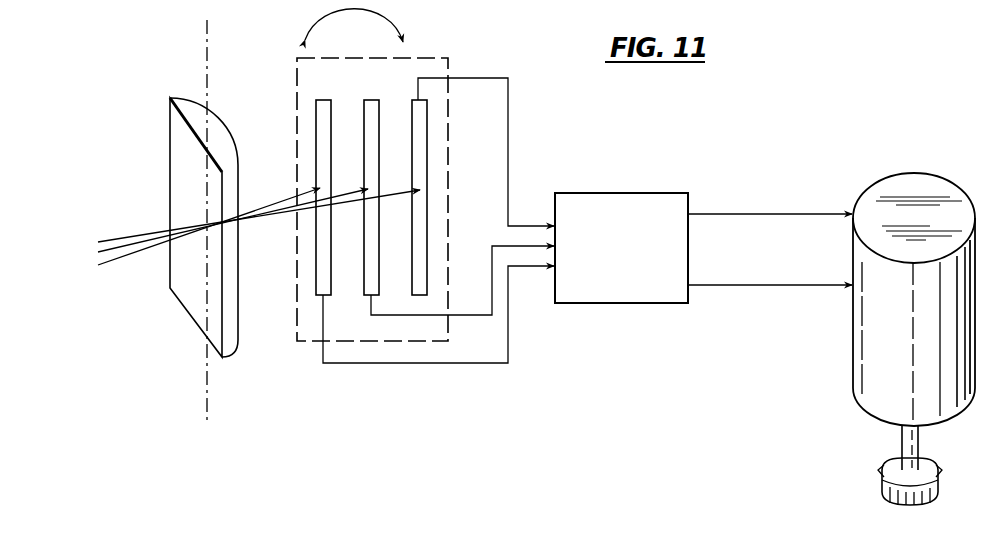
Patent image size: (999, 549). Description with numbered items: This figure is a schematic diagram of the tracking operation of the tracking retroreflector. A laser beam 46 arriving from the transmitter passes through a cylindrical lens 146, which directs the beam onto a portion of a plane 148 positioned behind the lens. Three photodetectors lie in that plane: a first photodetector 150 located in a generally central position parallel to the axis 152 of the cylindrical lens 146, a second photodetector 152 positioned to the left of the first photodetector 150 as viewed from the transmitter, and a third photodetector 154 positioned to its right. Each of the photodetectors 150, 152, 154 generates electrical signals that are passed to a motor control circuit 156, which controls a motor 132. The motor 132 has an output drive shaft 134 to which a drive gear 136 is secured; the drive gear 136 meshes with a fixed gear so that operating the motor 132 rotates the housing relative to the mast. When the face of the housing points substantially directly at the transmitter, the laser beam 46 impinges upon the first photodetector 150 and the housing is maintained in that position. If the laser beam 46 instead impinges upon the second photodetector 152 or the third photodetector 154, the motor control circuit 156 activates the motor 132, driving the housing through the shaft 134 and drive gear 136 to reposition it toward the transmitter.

The second photodetector 152 is at (207, 52).
The cylindrical lens 146 is at (200, 303).
The laser beam 46 is at (147, 243).
The plane 148 is at (425, 342).
The first photodetector 150 is at (362, 281).
The third photodetector 154 is at (427, 228).
The motor control circuit 156 is at (617, 193).
The motor 132 is at (866, 350).
The output drive shaft 134 is at (919, 446).
The drive gear 136 is at (882, 490).